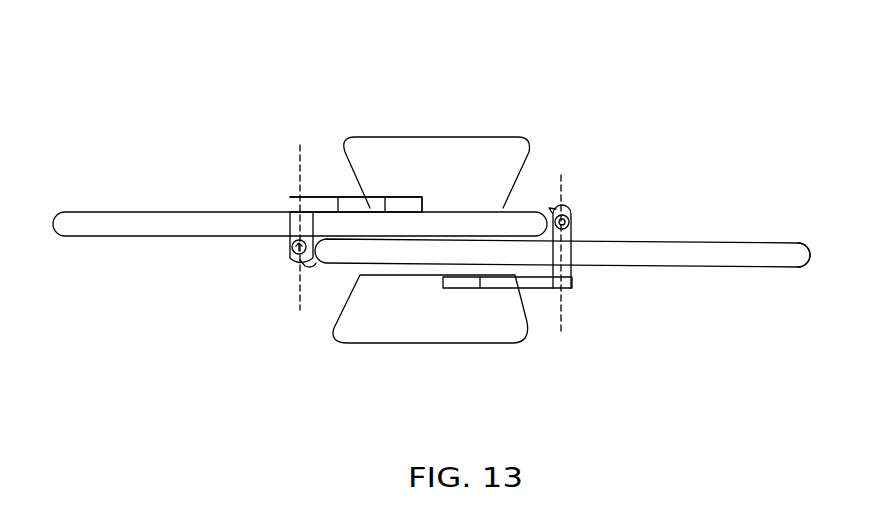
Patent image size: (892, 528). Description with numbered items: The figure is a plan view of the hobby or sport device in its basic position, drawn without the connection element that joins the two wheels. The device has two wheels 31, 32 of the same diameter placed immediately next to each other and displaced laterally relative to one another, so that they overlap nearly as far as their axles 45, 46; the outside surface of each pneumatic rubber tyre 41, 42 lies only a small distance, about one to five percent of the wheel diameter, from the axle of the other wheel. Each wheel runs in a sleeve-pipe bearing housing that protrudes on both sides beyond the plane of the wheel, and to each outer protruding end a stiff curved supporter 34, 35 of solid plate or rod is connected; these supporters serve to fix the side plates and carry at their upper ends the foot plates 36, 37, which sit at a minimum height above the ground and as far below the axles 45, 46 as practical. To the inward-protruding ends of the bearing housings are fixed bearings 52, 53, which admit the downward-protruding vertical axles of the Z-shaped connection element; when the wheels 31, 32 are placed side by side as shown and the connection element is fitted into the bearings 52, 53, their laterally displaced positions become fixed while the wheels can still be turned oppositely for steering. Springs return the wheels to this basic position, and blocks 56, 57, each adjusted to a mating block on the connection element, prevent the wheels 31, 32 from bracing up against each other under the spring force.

The wheel 31 is at (190, 210).
The wheel 32 is at (755, 240).
The curved supporter 34 is at (543, 289).
The curved supporter 35 is at (333, 197).
The foot plate 36 is at (352, 325).
The foot plate 37 is at (498, 158).
The tyre 41 is at (58, 212).
The tyre 42 is at (800, 268).
The axle 45 is at (300, 155).
The axle 46 is at (561, 323).
The bearing 52 is at (291, 250).
The bearing 53 is at (572, 217).
The block 56 is at (302, 268).
The block 57 is at (554, 177).